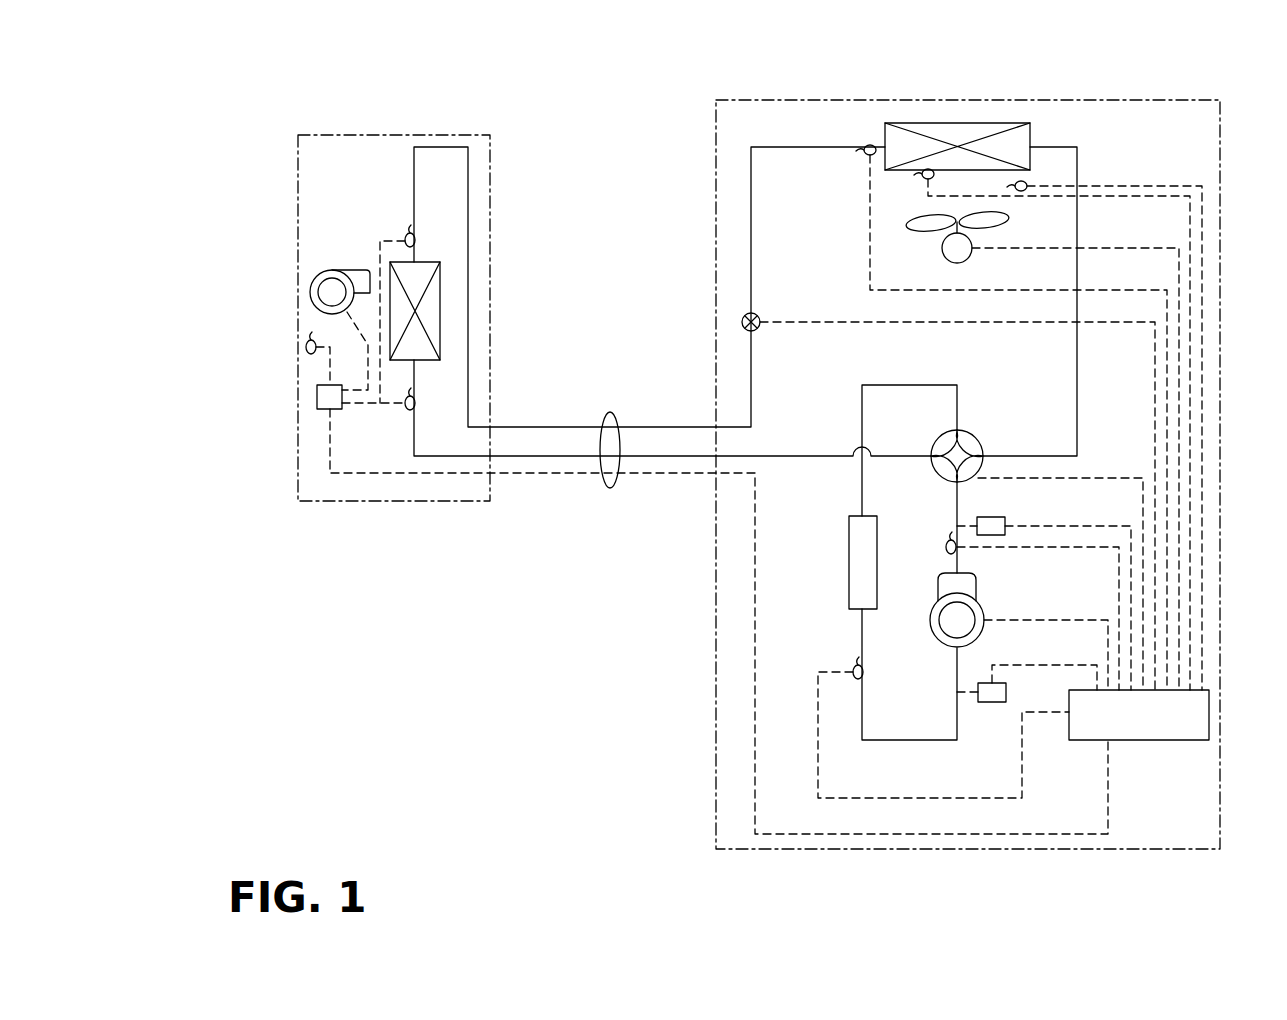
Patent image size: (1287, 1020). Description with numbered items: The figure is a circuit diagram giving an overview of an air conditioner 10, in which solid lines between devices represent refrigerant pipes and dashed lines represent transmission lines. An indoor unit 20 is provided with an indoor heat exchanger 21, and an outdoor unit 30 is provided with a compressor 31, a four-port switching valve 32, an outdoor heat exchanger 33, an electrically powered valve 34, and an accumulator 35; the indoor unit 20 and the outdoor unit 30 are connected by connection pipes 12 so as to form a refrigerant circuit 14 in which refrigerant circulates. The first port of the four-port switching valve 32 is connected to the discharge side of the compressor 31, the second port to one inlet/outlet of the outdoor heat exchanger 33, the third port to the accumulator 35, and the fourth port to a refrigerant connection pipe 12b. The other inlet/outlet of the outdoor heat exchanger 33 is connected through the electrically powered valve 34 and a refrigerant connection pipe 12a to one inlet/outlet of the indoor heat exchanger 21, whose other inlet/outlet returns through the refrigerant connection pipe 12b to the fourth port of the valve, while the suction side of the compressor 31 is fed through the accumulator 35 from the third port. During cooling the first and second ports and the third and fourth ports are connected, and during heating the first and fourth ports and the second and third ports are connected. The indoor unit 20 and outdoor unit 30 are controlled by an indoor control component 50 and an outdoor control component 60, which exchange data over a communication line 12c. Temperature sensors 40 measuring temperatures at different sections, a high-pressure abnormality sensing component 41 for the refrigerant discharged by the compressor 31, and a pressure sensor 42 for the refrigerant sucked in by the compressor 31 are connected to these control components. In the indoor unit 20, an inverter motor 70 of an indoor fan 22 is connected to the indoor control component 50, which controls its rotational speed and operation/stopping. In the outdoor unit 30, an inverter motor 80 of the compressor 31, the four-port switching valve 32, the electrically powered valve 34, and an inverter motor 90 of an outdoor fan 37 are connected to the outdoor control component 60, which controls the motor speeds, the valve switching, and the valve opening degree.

The air conditioner 10 is at (630, 86).
The connection pipes 12 is at (604, 486).
The refrigerant connection pipe 12a is at (632, 427).
The refrigerant connection pipe 12b is at (555, 455).
The communication line 12c is at (673, 475).
The refrigerant circuit 14 is at (862, 631).
The indoor unit 20 is at (440, 132).
The indoor heat exchanger 21 is at (440, 318).
The indoor fan 22 is at (330, 252).
The outdoor unit 30 is at (1105, 99).
The compressor 31 is at (978, 590).
The four-port switching valve 32 is at (972, 440).
The outdoor heat exchanger 33 is at (985, 122).
The electrically powered valve 34 is at (742, 320).
The accumulator 35 is at (849, 560).
The outdoor fan 37 is at (905, 224).
The temperature sensors 40 is at (405, 236).
The high-pressure abnormality sensing component 41 is at (993, 516).
The pressure sensor 42 is at (990, 703).
The indoor control component 50 is at (322, 410).
The outdoor control component 60 is at (1165, 742).
The inverter motor 70 is at (318, 285).
The inverter motor 80 is at (945, 640).
The inverter motor 90 is at (942, 252).